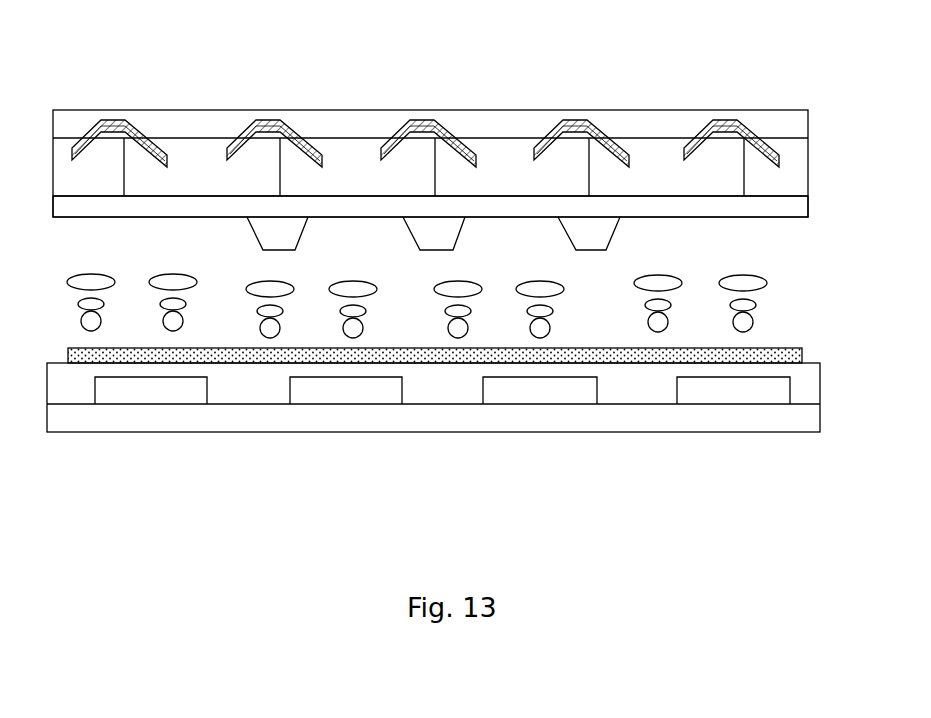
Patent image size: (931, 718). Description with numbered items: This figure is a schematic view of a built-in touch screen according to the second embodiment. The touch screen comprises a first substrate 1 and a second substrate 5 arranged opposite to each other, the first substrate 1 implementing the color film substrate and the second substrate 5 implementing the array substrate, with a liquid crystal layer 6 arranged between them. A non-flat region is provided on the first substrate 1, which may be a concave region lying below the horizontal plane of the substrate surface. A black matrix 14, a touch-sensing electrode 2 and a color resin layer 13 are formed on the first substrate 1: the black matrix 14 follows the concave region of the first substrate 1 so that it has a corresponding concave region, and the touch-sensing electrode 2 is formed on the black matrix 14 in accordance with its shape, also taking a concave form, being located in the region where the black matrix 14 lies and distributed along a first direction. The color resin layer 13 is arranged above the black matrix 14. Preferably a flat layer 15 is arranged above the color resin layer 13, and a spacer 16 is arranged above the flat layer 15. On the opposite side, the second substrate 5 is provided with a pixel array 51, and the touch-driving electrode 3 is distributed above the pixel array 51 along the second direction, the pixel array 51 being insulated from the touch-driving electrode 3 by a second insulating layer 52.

The first substrate 1 is at (363, 123).
The touch-sensing electrode 2 is at (728, 121).
The color resin layer 13 is at (507, 155).
The black matrix 14 is at (435, 122).
The flat layer 15 is at (803, 210).
The spacer 16 is at (588, 242).
The liquid crystal layer 6 is at (745, 288).
The touch-driving electrode 3 is at (637, 352).
The second substrate 5 is at (232, 418).
The pixel array 51 is at (343, 392).
The second insulating layer 52 is at (450, 392).